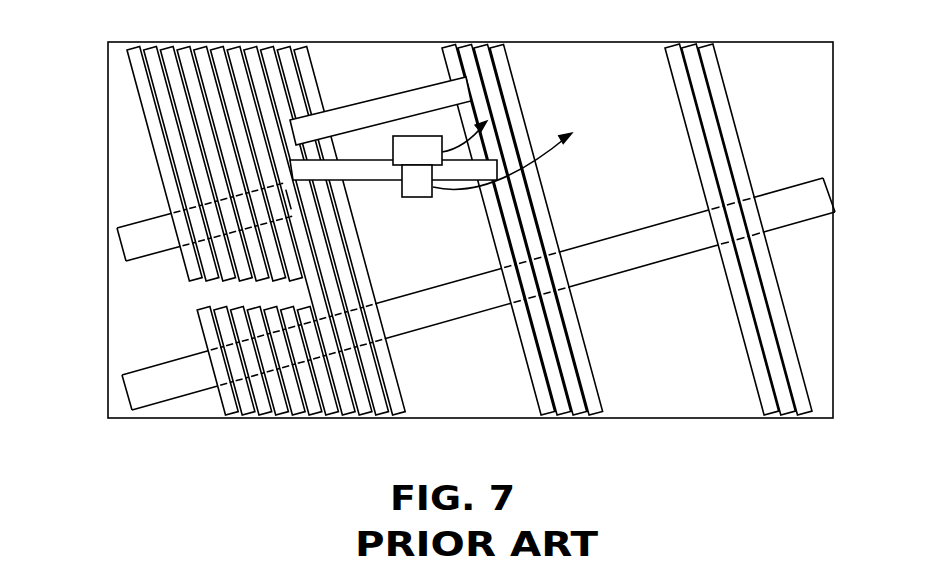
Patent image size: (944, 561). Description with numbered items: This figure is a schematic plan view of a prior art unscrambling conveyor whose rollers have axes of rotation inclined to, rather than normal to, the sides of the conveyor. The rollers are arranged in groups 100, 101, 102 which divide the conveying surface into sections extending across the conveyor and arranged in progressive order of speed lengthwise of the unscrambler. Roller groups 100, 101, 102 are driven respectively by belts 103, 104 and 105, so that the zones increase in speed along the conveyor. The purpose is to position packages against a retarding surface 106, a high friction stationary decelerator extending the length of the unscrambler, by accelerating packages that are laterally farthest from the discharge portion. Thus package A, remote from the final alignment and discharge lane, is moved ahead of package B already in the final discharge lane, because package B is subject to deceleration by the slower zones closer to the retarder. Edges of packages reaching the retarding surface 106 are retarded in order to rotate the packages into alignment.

The roller group 100 is at (471, 232).
The roller group 101 is at (357, 72).
The roller group 102 is at (814, 160).
The belt 103 is at (123, 255).
The belt 104 is at (420, 87).
The belt 105 is at (612, 276).
The retarding surface 106 is at (625, 41).